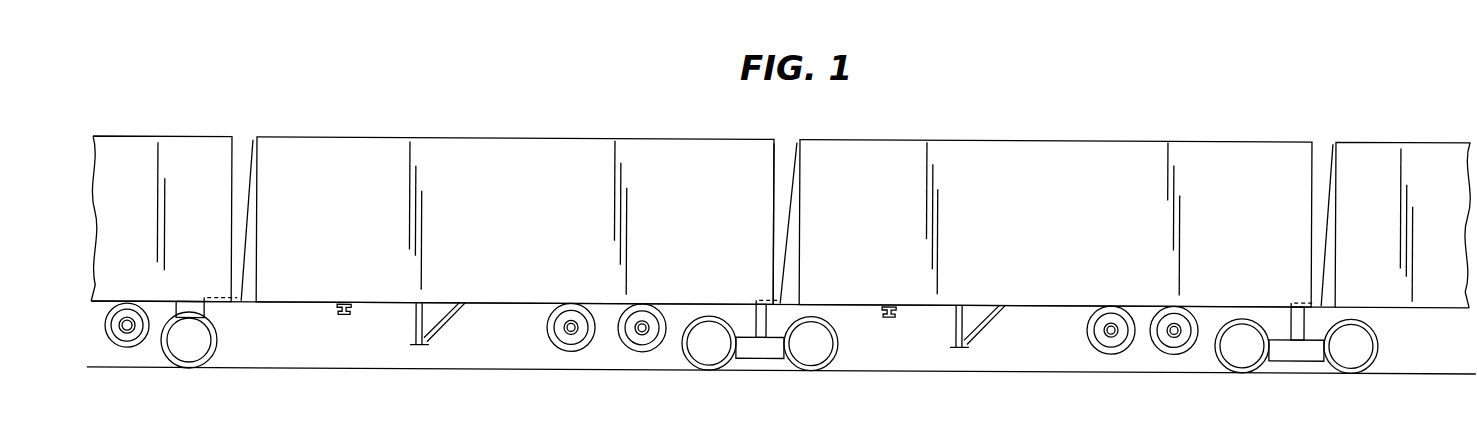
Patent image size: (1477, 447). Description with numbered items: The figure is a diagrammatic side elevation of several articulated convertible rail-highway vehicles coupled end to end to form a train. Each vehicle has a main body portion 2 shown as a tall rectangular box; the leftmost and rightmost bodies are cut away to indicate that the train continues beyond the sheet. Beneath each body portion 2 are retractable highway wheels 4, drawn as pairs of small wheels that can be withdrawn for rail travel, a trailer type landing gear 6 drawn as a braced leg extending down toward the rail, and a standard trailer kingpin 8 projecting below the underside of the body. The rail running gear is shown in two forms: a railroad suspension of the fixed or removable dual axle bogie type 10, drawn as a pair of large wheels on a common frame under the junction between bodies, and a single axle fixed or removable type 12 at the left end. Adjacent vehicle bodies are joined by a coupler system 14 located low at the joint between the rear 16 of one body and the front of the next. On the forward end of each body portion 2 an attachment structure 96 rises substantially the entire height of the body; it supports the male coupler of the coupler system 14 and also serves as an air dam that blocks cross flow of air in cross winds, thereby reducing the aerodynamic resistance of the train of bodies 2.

The main body portion 2 is at (218, 136).
The attachment structure 96 is at (252, 226).
The coupler system 14 is at (242, 298).
The rear of vehicle body 16 is at (778, 258).
The single axle railroad suspension 12 is at (185, 369).
The trailer kingpin 8 is at (340, 310).
The trailer type landing gear 6 is at (425, 345).
The retractable highway wheels 4 is at (643, 320).
The dual axle bogie 10 is at (748, 358).